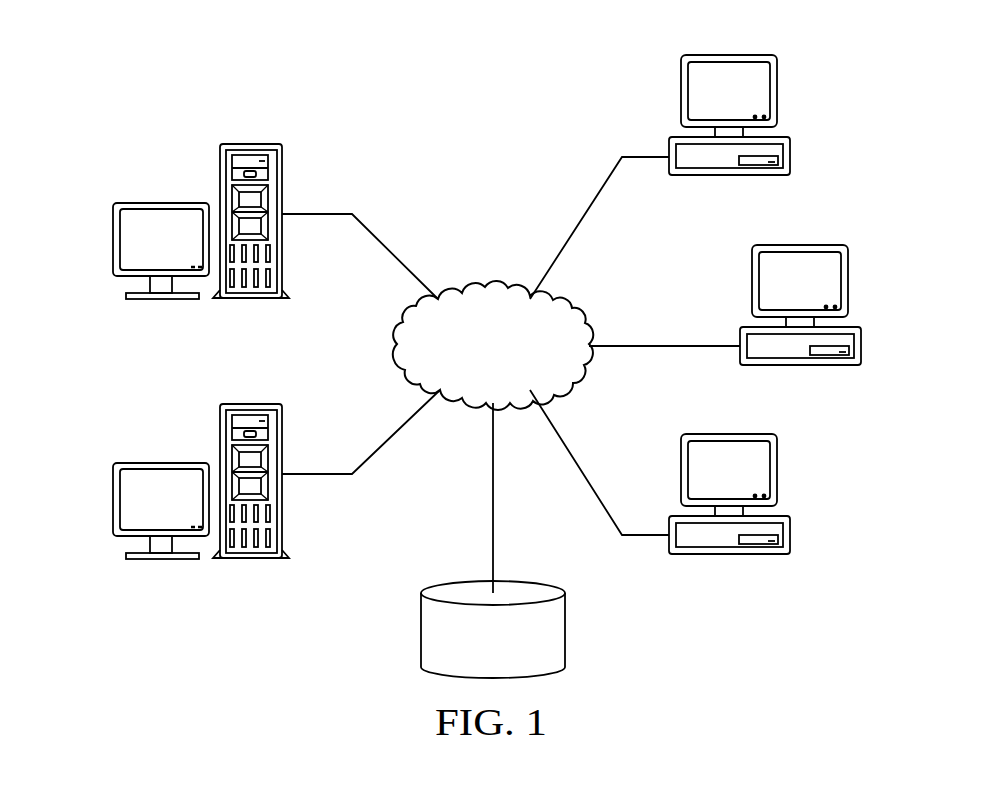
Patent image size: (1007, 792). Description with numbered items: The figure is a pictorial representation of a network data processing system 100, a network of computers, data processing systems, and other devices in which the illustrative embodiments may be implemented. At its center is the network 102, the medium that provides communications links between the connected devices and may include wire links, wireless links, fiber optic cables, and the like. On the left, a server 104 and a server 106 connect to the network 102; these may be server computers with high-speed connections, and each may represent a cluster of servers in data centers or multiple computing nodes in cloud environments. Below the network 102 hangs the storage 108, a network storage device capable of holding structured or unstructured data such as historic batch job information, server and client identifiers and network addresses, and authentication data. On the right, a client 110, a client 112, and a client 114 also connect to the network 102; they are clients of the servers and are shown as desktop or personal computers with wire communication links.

The network data processing system 100 is at (353, 61).
The network 102 is at (468, 292).
The server 104 is at (113, 240).
The server 106 is at (113, 497).
The storage 108 is at (421, 627).
The client 110 is at (790, 147).
The client 112 is at (861, 352).
The client 114 is at (790, 545).